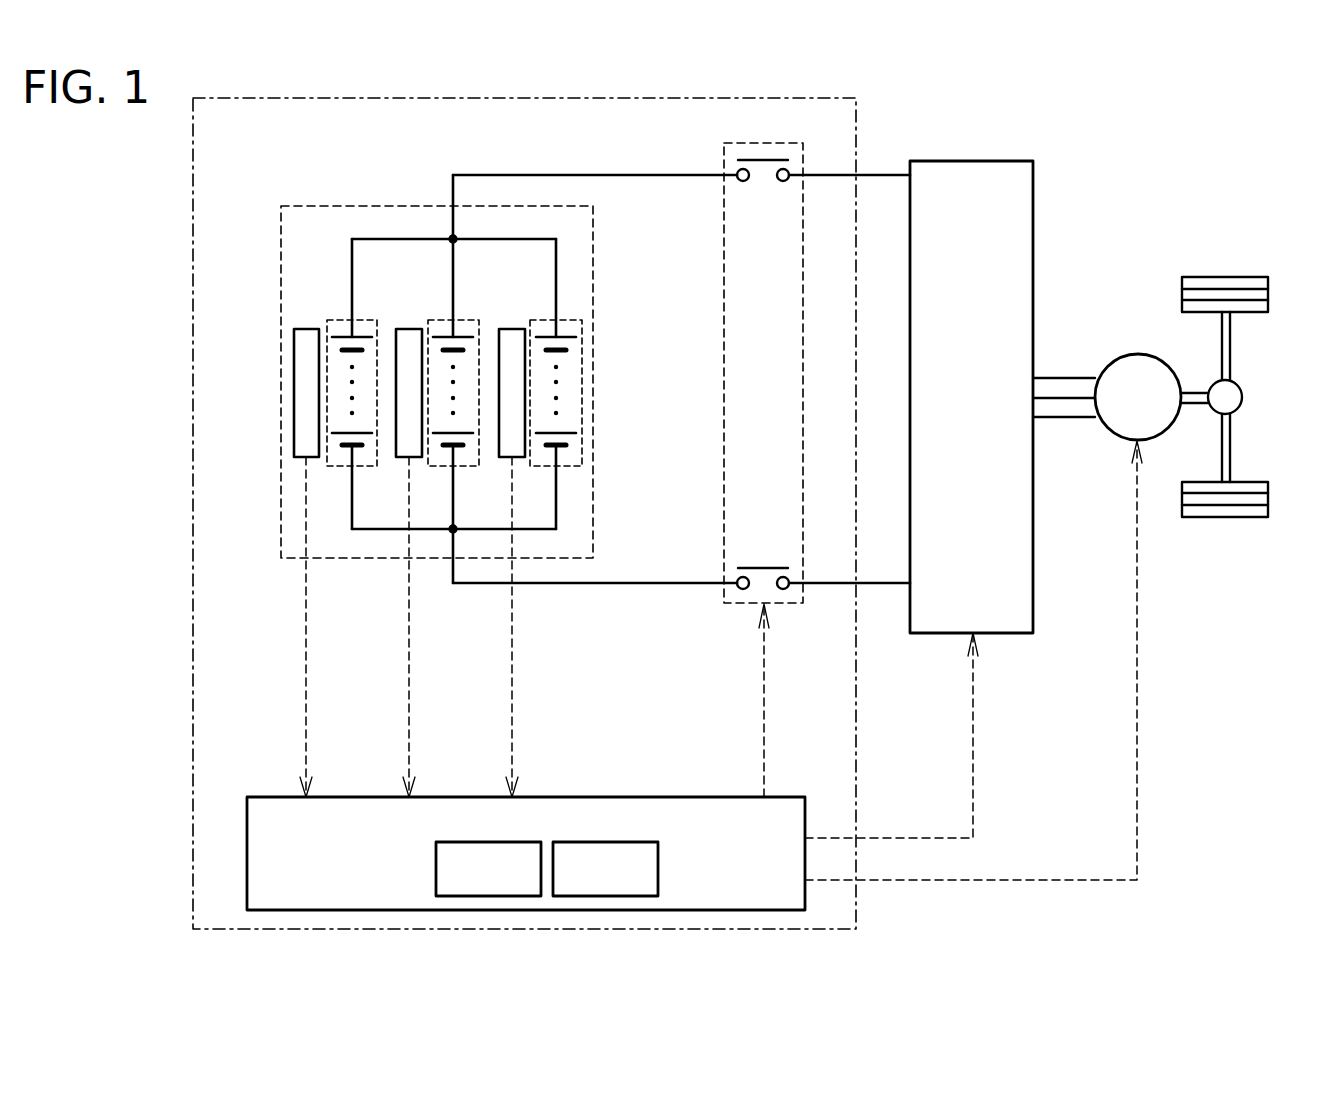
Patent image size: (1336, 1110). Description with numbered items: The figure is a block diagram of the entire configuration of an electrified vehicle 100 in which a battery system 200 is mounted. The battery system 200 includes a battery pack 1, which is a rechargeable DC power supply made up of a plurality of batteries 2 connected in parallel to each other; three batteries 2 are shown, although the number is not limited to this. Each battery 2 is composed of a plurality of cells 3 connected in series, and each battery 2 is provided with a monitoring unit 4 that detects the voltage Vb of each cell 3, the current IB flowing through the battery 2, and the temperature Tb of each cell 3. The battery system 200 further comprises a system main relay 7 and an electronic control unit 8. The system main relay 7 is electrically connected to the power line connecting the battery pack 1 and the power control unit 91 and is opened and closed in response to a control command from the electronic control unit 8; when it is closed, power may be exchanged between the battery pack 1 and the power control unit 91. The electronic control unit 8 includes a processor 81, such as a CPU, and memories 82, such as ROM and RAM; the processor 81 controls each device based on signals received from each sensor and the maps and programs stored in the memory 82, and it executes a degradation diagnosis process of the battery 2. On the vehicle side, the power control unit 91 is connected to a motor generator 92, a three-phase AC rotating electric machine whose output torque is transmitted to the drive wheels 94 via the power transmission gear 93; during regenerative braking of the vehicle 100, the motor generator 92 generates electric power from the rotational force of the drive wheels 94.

The vehicle 100 is at (1143, 135).
The battery system 200 is at (762, 97).
The battery pack 1 is at (380, 206).
The battery 2 is at (358, 321).
The cell 3 is at (342, 335).
The monitoring unit 4 is at (298, 458).
The system main relay (SMR) 7 is at (773, 143).
The electronic control unit (ECU) 8 is at (683, 797).
The processor 81 is at (486, 896).
The memory 82 is at (600, 896).
The power control unit (PCU) 91 is at (995, 161).
The motor generator 92 is at (1137, 354).
The power transmission gear 93 is at (1242, 397).
The drive wheels 94 is at (1253, 277).